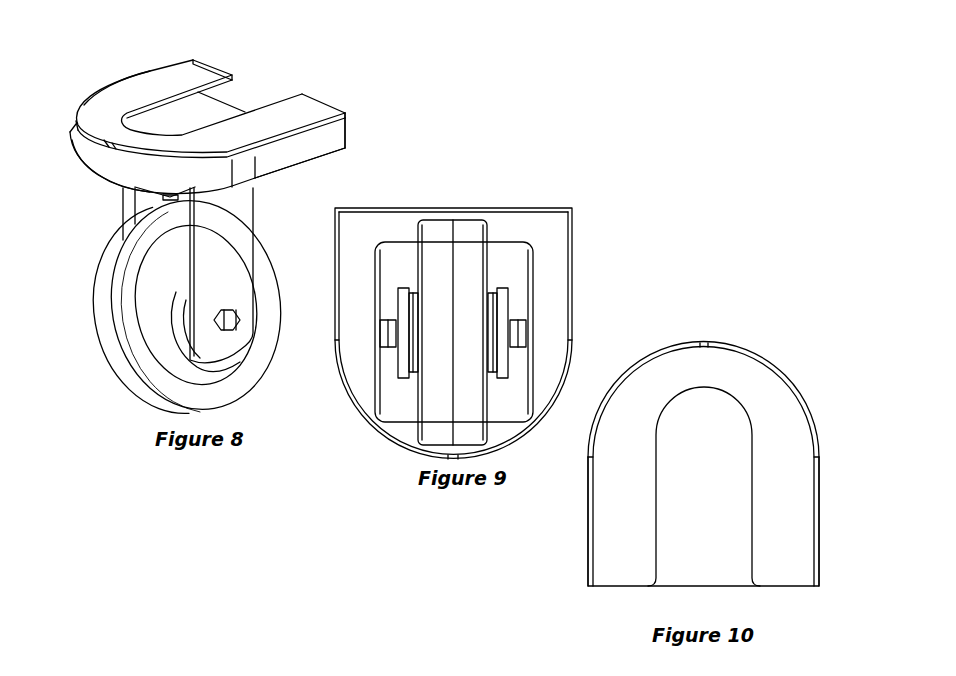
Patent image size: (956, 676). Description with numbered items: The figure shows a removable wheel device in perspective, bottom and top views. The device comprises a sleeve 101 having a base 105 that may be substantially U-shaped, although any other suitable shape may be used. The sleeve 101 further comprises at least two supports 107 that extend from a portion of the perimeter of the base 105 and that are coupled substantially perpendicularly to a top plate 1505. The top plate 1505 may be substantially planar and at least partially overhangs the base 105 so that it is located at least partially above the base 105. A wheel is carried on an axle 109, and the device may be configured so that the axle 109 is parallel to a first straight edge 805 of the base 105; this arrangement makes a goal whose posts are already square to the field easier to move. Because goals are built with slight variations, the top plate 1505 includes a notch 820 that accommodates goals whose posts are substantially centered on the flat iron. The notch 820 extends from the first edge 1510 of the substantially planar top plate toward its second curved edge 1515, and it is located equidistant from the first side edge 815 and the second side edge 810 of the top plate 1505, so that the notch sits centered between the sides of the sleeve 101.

In FIG. 8, the sleeve 101 is at (235, 93).
In FIG. 8, the base 105 is at (112, 160).
In FIG. 8, the supports 107 is at (313, 140).
In FIG. 8, the axle 109 is at (240, 320).
In FIG. 9, the axle 109 is at (527, 333).
In FIG. 8, the first straight edge 805 is at (296, 94).
In FIG. 9, the first straight edge 805 is at (510, 208).
In FIG. 8, the second side edge 810 is at (345, 113).
In FIG. 10, the second side edge 810 is at (588, 522).
In FIG. 8, the first side edge 815 is at (153, 73).
In FIG. 10, the first side edge 815 is at (820, 504).
In FIG. 8, the notch 820 is at (197, 122).
In FIG. 10, the notch 820 is at (690, 478).
In FIG. 8, the top plate 1505 is at (120, 95).
In FIG. 10, the top plate 1505 is at (778, 432).
In FIG. 8, the first edge of the top plate 1510 is at (223, 63).
In FIG. 10, the first edge of the top plate 1510 is at (660, 588).
In FIG. 8, the second curved edge of the top plate 1515 is at (86, 135).
In FIG. 10, the second curved edge of the top plate 1515 is at (712, 343).